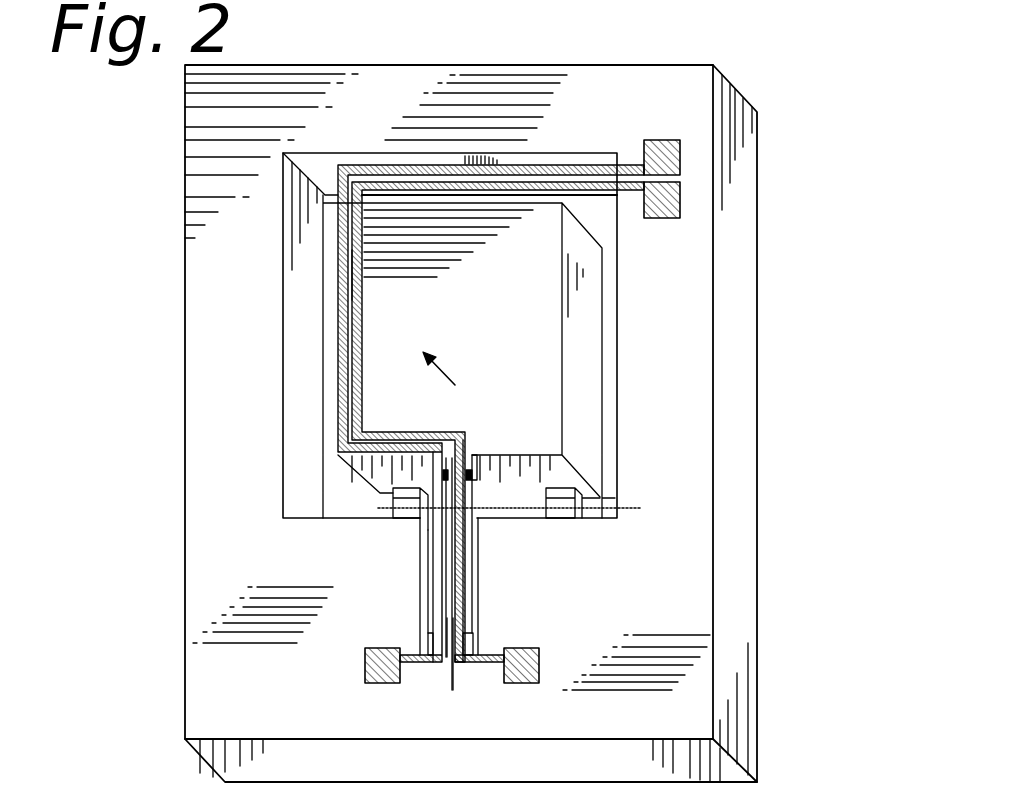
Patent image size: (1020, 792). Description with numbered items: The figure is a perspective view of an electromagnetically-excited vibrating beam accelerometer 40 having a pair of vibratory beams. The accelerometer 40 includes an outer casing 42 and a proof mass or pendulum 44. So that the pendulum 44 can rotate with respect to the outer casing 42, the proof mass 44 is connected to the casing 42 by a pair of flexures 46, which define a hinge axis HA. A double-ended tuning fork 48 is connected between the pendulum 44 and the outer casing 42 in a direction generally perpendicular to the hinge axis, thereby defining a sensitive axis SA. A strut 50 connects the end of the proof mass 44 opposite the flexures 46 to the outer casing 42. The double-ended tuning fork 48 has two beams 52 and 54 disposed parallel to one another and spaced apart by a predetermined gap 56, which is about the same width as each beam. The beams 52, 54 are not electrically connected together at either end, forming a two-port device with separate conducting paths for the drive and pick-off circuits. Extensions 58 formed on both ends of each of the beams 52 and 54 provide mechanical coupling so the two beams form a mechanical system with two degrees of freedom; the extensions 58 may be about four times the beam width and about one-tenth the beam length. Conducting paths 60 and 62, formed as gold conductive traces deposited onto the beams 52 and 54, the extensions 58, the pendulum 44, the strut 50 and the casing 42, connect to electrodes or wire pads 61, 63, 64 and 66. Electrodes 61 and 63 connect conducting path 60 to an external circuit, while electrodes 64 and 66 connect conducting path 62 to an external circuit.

The accelerometer 40 is at (529, 423).
The outer casing 42 is at (700, 350).
The proof mass or pendulum 44 is at (532, 352).
The flexures 46 is at (413, 500).
The double-ended tuning fork (DETF) 48 is at (545, 567).
The strut 50 is at (540, 178).
The vibrating beam 52 is at (437, 600).
The vibrating beam 54 is at (460, 612).
The gap 56 is at (453, 688).
The extensions 58 is at (338, 453).
The conducting path 60 is at (336, 335).
The electrode or wire pad 61 is at (657, 140).
The conducting path 62 is at (360, 255).
The electrode or wire pad 63 is at (383, 683).
The electrode or wire pad 64 is at (660, 218).
The electrode or wire pad 66 is at (540, 683).